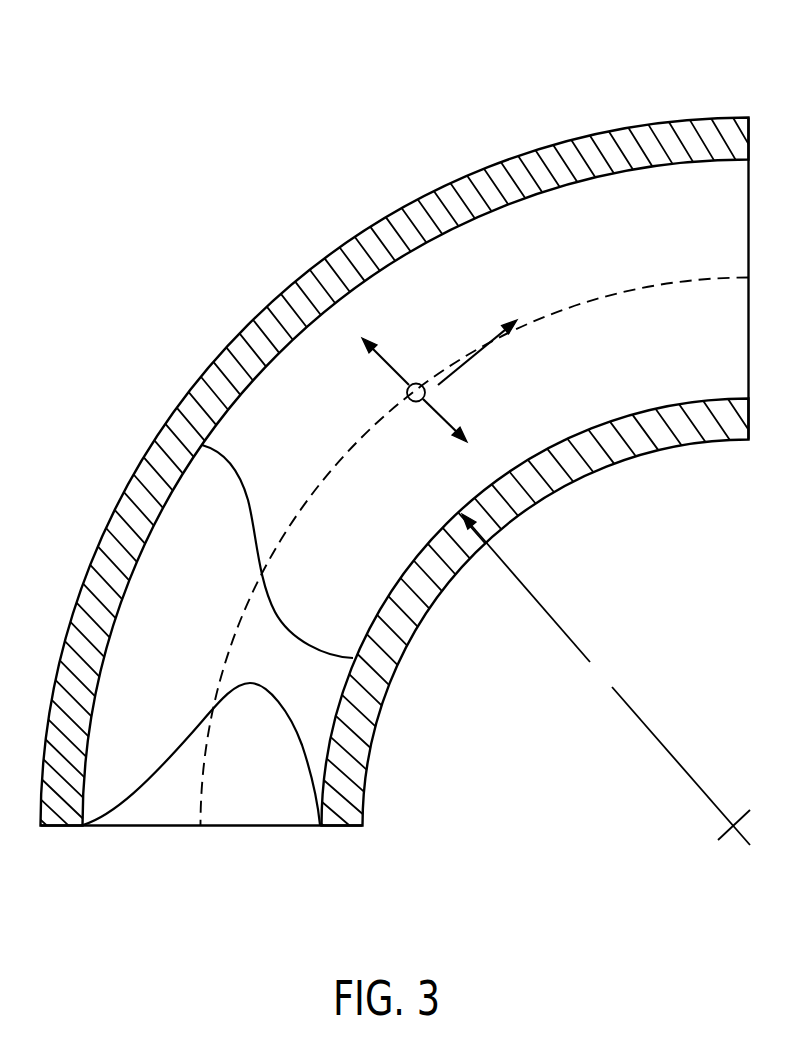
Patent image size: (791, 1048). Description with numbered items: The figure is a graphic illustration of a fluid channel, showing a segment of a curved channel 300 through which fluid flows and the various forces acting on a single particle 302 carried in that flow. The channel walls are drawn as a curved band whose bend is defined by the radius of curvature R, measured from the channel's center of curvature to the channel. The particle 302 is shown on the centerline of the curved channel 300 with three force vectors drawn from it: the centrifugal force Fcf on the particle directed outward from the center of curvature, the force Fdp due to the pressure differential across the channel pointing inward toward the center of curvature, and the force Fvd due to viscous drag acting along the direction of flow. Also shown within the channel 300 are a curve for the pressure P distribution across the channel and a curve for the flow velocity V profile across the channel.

The curved channel 300 is at (654, 78).
The particle 302 is at (449, 364).
The pressure P is at (300, 551).
The flow velocity V is at (201, 777).
The radius of curvature of the channel R is at (606, 679).
The centrifugal force on the particle Fcf is at (385, 342).
The force due to pressure differential Fdp is at (474, 425).
The force due to viscous drag Fvd is at (498, 331).